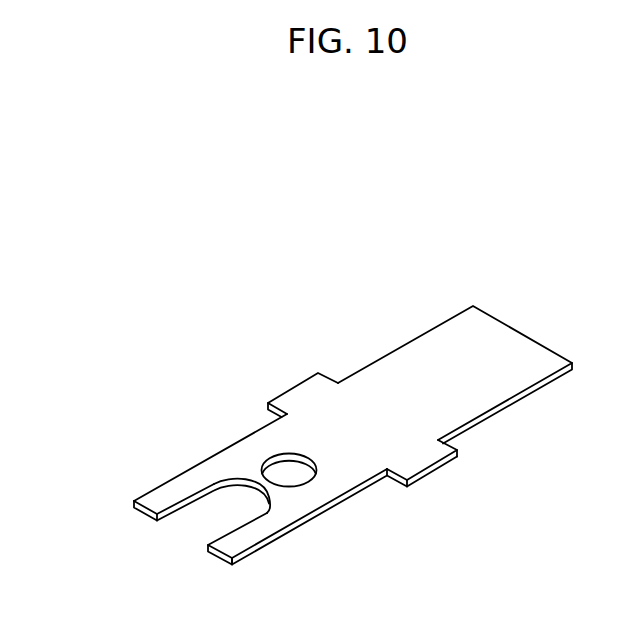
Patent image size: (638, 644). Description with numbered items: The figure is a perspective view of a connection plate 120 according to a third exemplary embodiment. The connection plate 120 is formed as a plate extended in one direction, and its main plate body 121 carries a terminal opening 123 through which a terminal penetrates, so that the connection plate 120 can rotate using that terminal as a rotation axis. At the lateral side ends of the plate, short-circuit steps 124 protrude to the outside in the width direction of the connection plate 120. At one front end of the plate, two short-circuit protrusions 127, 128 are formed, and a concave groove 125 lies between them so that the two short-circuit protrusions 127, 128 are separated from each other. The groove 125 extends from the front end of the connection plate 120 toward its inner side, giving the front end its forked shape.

The connection plate 120 is at (384, 242).
The plate body 121 is at (488, 397).
The terminal opening 123 is at (287, 457).
The short-circuit step 124 is at (320, 385).
The concave groove 125 is at (219, 488).
The short-circuit protrusion 127 is at (150, 499).
The short-circuit protrusion 128 is at (240, 546).